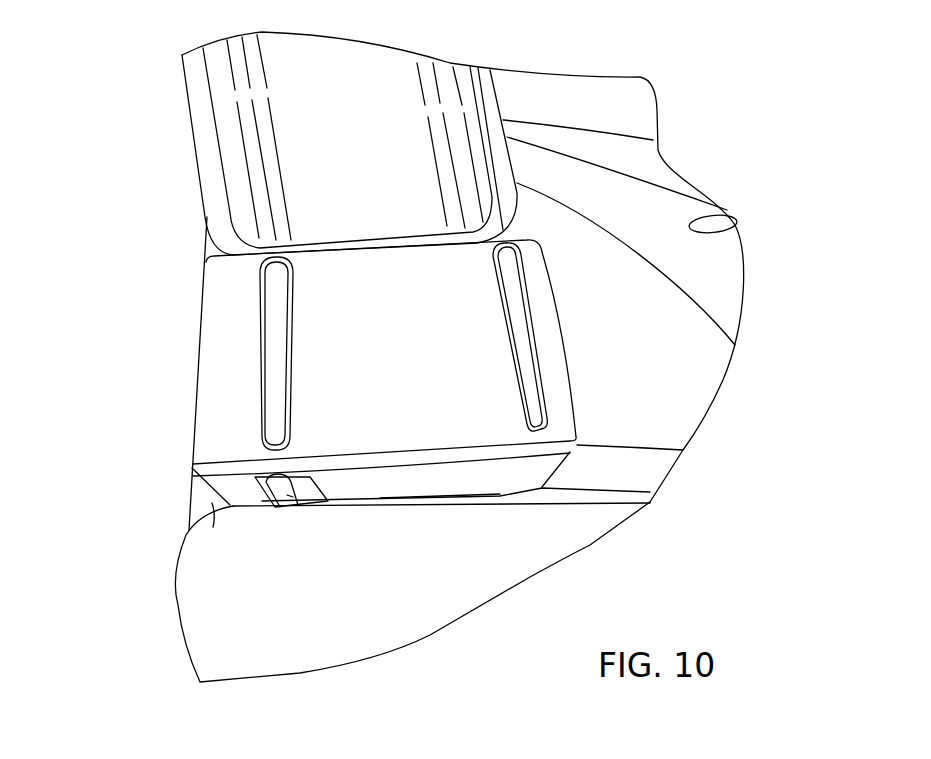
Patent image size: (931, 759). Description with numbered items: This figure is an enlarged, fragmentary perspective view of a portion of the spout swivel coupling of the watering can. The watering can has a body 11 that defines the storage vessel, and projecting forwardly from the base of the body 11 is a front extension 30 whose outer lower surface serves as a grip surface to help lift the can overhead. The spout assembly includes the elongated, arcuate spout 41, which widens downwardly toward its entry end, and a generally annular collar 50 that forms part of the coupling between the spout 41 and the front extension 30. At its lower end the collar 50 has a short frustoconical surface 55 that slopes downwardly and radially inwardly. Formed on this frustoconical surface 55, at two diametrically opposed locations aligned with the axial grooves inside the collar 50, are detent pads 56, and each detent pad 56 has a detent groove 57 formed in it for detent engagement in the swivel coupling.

The body 11 is at (672, 143).
The front extension 30 is at (184, 636).
The spout 41 is at (240, 150).
The collar 50 is at (196, 317).
The frustoconical surface 55 is at (450, 488).
The detent pad 56 is at (262, 502).
The detent groove 57 is at (287, 495).